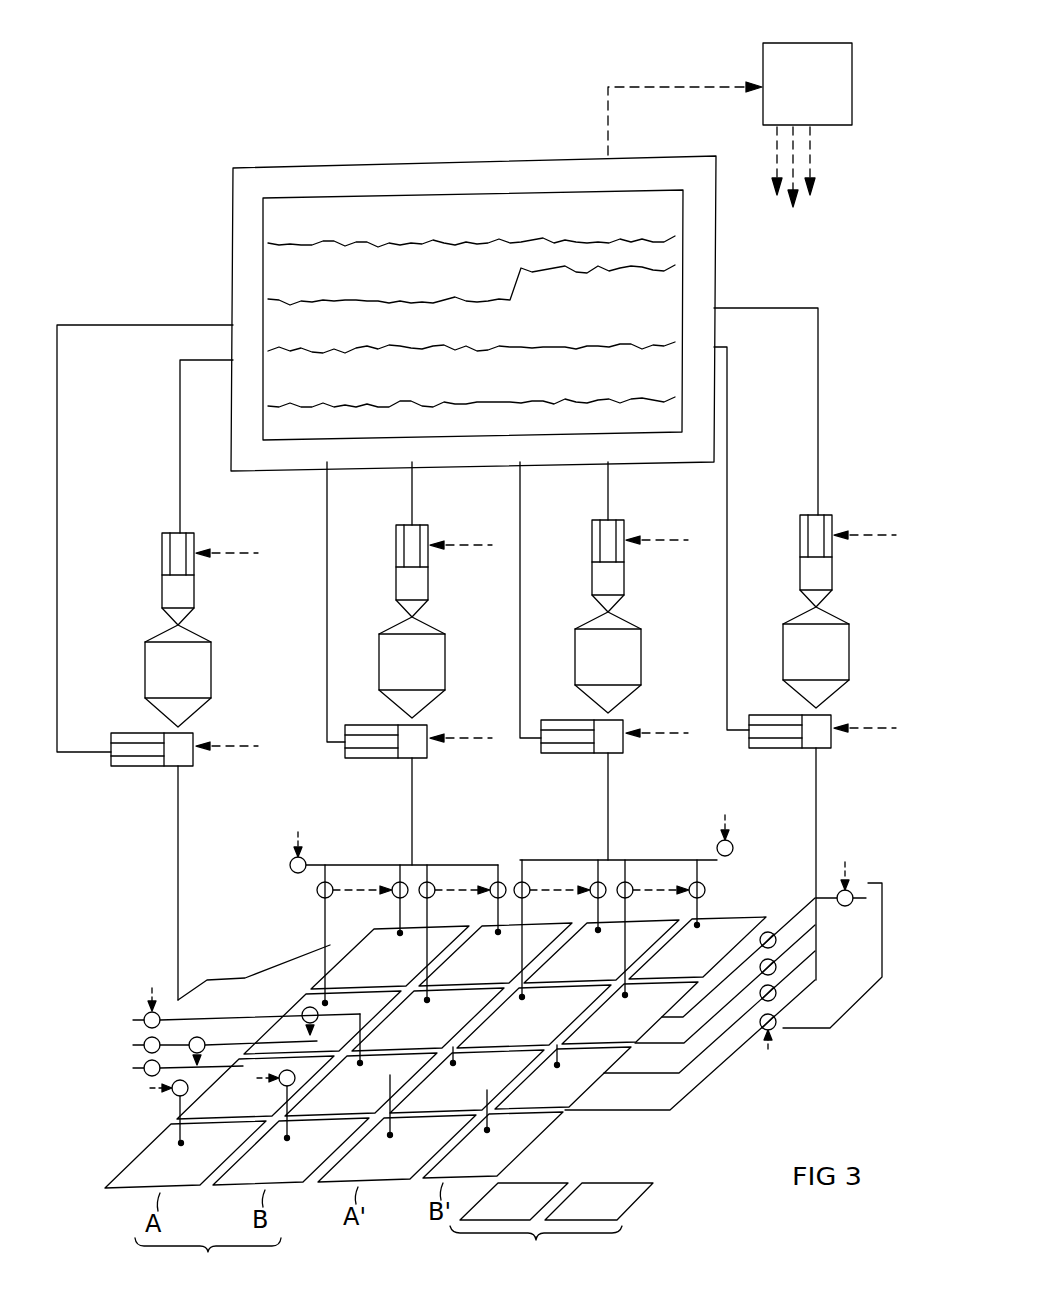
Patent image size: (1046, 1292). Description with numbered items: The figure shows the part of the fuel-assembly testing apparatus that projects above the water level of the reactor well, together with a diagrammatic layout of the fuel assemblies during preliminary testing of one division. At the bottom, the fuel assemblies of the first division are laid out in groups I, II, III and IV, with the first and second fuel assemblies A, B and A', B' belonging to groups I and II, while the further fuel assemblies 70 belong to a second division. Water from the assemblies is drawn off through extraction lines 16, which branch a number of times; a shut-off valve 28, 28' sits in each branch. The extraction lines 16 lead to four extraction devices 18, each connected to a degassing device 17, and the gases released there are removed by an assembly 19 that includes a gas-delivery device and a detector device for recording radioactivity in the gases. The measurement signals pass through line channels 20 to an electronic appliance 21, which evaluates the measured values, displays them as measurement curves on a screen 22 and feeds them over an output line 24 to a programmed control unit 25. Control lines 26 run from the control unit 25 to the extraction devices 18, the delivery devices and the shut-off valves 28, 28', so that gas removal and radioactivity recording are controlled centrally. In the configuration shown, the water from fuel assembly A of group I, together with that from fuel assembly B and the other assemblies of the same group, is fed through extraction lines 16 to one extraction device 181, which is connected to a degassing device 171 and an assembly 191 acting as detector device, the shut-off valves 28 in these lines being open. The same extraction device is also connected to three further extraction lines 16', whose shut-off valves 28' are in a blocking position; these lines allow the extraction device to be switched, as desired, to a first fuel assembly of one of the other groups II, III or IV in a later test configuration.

The extraction lines 16 is at (493, 968).
The further extraction lines 16' is at (210, 1045).
The degassing devices 17 is at (432, 663).
The degassing device 171 is at (200, 670).
The extraction devices 18 is at (402, 760).
The extraction device 181 is at (172, 768).
The assembly 19 is at (408, 586).
The assembly (detector device) 191 is at (172, 592).
The line channels 20 is at (178, 483).
The electronic appliance 21 is at (232, 214).
The screen 22 is at (662, 287).
The output line 24 is at (672, 86).
The programmed control unit 25 is at (816, 52).
The control lines 26 is at (812, 150).
The shut-off valve 28 is at (515, 936).
The shut-off valve 28' is at (132, 978).
The further fuel assemblies 70 is at (620, 1187).
The group I is at (208, 1261).
The group II is at (510, 1175).
The group III is at (850, 1003).
The group IV is at (435, 1005).